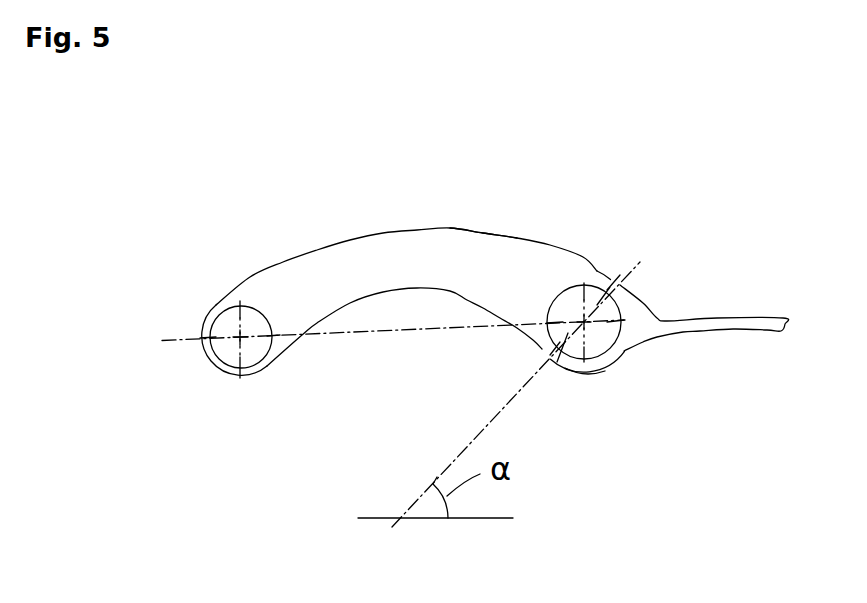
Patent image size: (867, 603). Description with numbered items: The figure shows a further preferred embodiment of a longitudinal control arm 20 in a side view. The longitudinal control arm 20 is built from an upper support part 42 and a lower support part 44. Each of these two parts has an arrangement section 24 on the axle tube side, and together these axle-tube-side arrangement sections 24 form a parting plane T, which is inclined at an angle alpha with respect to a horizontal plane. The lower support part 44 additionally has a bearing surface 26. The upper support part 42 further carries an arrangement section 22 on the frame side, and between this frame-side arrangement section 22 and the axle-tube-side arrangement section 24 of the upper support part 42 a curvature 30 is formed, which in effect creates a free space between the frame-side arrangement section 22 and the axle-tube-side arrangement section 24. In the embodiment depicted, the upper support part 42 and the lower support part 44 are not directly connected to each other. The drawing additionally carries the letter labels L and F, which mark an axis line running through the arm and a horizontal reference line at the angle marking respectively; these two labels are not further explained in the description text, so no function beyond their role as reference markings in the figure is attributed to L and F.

The longitudinal control arm 20 is at (453, 287).
The arrangement section on the frame side 22 is at (214, 308).
The arrangement section on the axle tube side 24 is at (596, 273).
The bearing surface 26 is at (642, 337).
The curvature 30 is at (447, 255).
The upper support part 42 is at (481, 218).
The lower support part 44 is at (603, 385).
The longitudinal axis L is at (412, 332).
The parting plane T is at (641, 258).
The reference line F is at (502, 518).